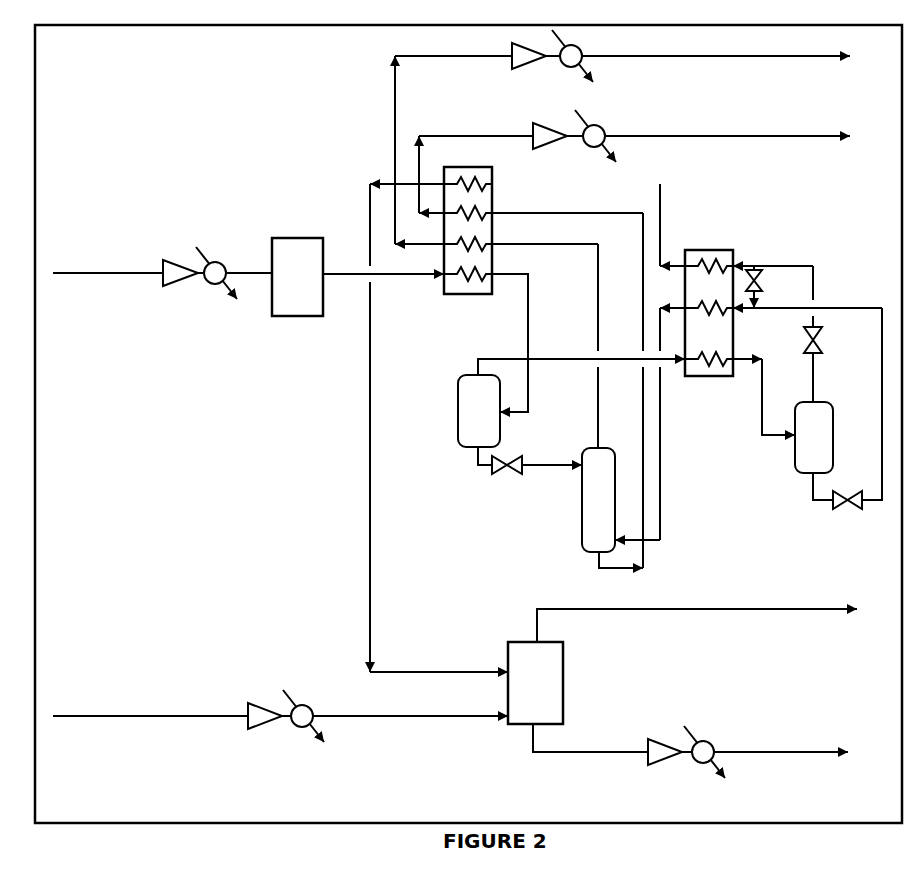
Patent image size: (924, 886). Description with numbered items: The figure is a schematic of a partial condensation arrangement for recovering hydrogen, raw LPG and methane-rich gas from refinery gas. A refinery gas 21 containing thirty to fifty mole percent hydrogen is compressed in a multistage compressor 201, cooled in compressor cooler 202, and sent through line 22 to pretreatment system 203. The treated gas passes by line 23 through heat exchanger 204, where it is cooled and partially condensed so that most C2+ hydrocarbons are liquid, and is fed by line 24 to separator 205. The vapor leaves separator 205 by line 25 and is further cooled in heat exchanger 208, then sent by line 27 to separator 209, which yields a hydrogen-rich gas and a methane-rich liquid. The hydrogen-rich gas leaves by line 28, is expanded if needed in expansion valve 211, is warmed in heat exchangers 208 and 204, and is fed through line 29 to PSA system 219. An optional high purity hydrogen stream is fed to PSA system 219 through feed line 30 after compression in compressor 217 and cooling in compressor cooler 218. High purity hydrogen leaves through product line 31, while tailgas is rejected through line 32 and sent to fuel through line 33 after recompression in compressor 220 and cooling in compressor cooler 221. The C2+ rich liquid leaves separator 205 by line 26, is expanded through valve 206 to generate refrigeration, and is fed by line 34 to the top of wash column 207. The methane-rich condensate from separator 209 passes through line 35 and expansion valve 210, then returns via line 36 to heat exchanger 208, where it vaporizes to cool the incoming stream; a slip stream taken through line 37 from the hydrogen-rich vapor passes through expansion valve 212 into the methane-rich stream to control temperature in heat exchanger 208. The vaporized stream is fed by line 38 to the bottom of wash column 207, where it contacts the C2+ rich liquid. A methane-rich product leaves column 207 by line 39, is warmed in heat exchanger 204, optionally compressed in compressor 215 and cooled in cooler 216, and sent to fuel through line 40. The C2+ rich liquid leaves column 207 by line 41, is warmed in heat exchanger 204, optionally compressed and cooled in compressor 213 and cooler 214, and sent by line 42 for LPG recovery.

The refinery gas 21 is at (86, 278).
The line 22 is at (256, 270).
The line 23 is at (328, 272).
The line 24 is at (530, 298).
The line 25 is at (494, 359).
The line 26 is at (471, 463).
The line 27 is at (766, 394).
The line 28 is at (816, 372).
The line 29 is at (362, 528).
The feed line 30 is at (82, 720).
The product line 31 is at (680, 613).
The line 32 is at (600, 756).
The line 33 is at (768, 755).
The line 34 is at (537, 462).
The line 35 is at (810, 501).
The line 36 is at (878, 410).
The line 37 is at (760, 306).
The line 38 is at (661, 488).
The line 39 is at (600, 397).
The line 40 is at (684, 59).
The line 41 is at (603, 576).
The line 42 is at (640, 134).
The multistage compressor 201 is at (176, 290).
The compressor cooler 202 is at (214, 290).
The pretreatment system 203 is at (297, 277).
The heat exchanger 204 is at (468, 230).
The separator 205 is at (479, 411).
The valve 206 is at (508, 476).
The wash column 207 is at (599, 500).
The heat exchanger 208 is at (709, 313).
The separator 209 is at (814, 437).
The expansion valve 210 is at (850, 512).
The expansion valve 211 is at (814, 344).
The expansion valve 212 is at (762, 276).
The compressor 213 is at (552, 152).
The cooler 214 is at (592, 152).
The compressor 215 is at (530, 72).
The cooler 216 is at (569, 72).
The compressor 217 is at (260, 732).
The compressor cooler 218 is at (300, 732).
The PSA system 219 is at (535, 683).
The compressor 220 is at (662, 768).
The compressor cooler 221 is at (702, 768).